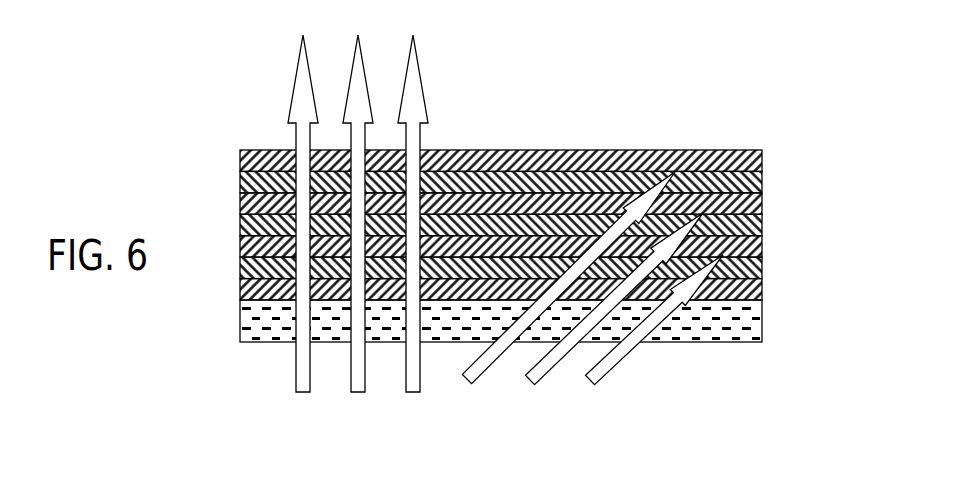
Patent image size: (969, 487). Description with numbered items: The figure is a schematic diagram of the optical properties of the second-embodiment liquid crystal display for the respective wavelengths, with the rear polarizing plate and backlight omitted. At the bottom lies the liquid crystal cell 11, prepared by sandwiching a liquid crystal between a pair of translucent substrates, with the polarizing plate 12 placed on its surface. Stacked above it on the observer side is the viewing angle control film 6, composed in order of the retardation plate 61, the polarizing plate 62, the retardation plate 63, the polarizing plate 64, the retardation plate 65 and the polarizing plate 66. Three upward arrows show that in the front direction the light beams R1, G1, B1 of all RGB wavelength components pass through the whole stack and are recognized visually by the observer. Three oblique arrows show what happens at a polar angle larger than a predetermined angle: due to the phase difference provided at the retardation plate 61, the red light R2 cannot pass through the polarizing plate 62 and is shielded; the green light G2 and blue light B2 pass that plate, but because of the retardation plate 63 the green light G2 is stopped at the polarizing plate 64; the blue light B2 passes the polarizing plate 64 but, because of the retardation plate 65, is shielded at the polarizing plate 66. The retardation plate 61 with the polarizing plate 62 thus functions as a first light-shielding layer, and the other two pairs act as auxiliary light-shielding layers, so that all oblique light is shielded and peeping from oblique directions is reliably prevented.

The viewing angle control film 6 is at (576, 202).
The polarizing plate 66 is at (762, 155).
The retardation plate 65 is at (762, 178).
The polarizing plate 64 is at (762, 202).
The retardation plate 63 is at (762, 227).
The polarizing plate 62 is at (762, 248).
The retardation plate 61 is at (547, 265).
The polarizing plate 12 is at (762, 290).
The liquid crystal cell 11 is at (762, 322).
The light beam of B wavelength component in front direction B1 is at (298, 393).
The light beam of G wavelength component in front direction G1 is at (353, 393).
The light beam of R wavelength component in front direction R1 is at (408, 393).
The light beam of B wavelength component in oblique direction B2 is at (465, 381).
The light beam of G wavelength component in oblique direction G2 is at (527, 382).
The light beam of R wavelength component in oblique direction R2 is at (587, 382).